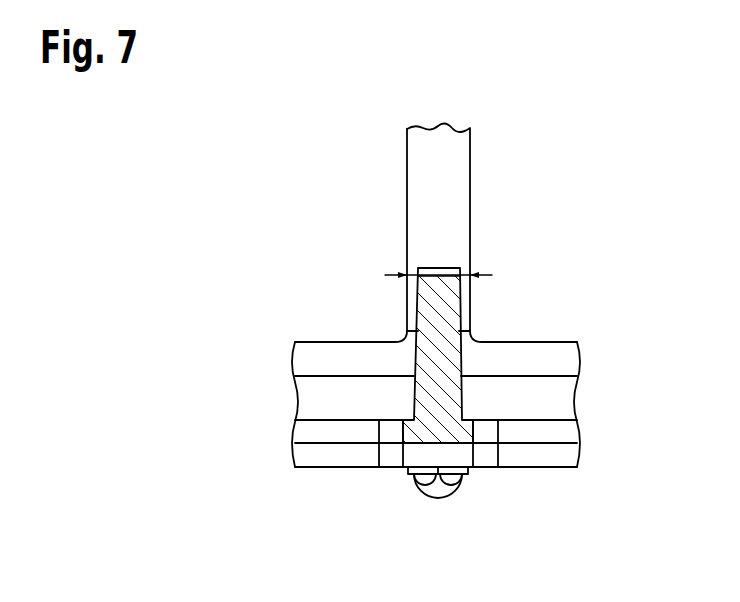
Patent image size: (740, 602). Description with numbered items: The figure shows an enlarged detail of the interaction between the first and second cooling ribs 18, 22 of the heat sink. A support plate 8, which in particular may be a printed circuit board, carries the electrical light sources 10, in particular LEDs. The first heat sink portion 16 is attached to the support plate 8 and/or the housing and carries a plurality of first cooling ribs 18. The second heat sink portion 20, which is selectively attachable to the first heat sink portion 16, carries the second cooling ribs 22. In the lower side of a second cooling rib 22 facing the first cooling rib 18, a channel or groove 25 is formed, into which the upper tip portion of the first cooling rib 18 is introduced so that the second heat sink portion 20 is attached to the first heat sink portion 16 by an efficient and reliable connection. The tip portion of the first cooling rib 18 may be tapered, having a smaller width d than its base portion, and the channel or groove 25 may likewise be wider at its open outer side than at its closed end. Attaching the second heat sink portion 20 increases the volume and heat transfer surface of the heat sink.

The second cooling rib 22 is at (433, 193).
The first cooling rib 18 is at (433, 300).
The second heat sink portion 20 is at (558, 327).
The channel or groove 25 is at (408, 342).
The first heat sink portion 16 is at (557, 436).
The support plate 8 is at (563, 456).
The electrical light source 10 is at (437, 488).
The width d is at (486, 275).